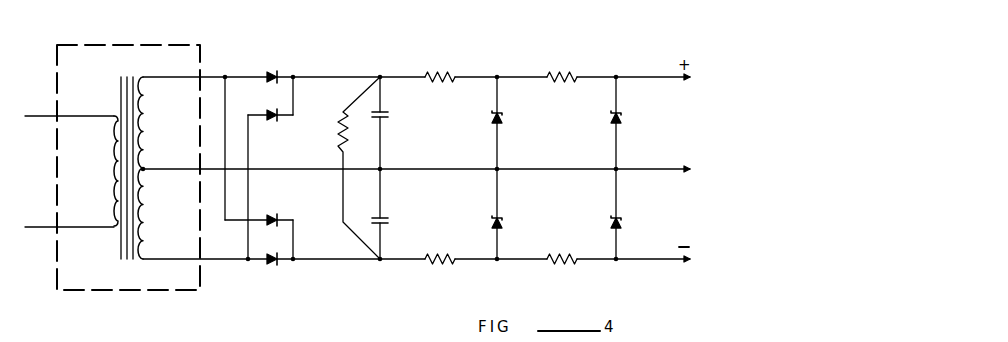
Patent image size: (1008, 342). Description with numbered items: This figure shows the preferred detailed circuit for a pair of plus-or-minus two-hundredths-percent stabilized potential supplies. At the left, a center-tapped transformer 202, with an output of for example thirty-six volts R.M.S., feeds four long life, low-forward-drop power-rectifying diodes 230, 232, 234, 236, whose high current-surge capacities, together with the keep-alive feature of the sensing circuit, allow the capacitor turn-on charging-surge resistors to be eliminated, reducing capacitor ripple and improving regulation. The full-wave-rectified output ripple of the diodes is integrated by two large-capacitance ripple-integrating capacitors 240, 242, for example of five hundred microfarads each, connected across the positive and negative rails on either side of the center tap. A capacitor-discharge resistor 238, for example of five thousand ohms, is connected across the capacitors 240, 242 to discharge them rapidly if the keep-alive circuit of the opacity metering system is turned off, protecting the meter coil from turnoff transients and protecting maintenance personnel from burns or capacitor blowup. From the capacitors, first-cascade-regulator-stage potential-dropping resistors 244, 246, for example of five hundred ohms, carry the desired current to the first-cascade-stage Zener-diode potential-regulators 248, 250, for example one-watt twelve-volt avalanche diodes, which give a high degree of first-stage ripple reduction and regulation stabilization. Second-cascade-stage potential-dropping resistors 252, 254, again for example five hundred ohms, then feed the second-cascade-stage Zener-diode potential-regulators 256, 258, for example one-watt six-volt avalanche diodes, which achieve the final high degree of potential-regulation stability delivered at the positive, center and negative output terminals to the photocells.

The transformer 202 is at (108, 45).
The power-rectifying diode 230 is at (280, 74).
The power-rectifying diode 232 is at (284, 118).
The power-rectifying diode 234 is at (282, 218).
The power-rectifying diode 236 is at (279, 263).
The capacitor-discharge resistor 238 is at (340, 138).
The ripple-integrating capacitor 240 is at (388, 117).
The ripple-integrating capacitor 242 is at (388, 221).
The first-cascade-regulator-stage potential-dropping resistor 244 is at (452, 74).
The first-cascade-regulator-stage potential-dropping resistor 246 is at (448, 256).
The first-cascade-stage Zener-diode potential-regulator 248 is at (503, 118).
The first-cascade-stage Zener-diode potential-regulator 250 is at (504, 224).
The second-cascade-stage potential-dropping resistor 252 is at (558, 74).
The second-cascade-stage potential-dropping resistor 254 is at (558, 256).
The second-cascade-stage Zener-diode potential-regulator 256 is at (622, 118).
The second-cascade-stage Zener-diode potential-regulator 258 is at (622, 224).